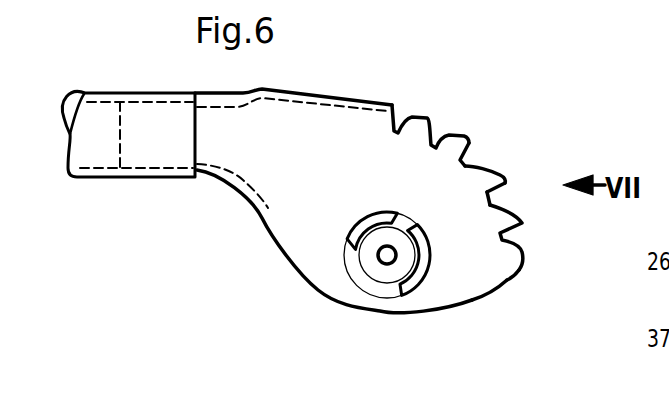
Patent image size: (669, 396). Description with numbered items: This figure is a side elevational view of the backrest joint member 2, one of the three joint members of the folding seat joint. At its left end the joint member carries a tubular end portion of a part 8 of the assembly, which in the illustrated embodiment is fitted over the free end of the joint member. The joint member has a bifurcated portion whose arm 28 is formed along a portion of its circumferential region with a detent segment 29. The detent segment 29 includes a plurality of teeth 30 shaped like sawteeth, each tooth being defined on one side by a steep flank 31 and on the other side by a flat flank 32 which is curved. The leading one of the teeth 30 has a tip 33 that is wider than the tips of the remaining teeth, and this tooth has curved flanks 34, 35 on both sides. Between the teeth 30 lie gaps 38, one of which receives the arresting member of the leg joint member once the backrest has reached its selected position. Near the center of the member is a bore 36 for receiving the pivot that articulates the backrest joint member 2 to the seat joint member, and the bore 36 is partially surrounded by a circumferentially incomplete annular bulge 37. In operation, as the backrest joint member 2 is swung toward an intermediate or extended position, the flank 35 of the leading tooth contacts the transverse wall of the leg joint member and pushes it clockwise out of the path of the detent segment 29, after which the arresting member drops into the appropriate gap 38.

The backrest joint member 2 is at (267, 172).
The leg part 8 is at (101, 157).
The arm 28 is at (300, 213).
The detent segment 29 is at (452, 125).
The teeth 30 is at (486, 174).
The steep flank 31 is at (495, 193).
The flat flank 32 is at (503, 175).
The tip 33 is at (523, 264).
The curved flank 34 is at (524, 246).
The curved flank 35 is at (500, 287).
The bores 36 is at (386, 257).
The annular bulges 37 is at (350, 236).
The gaps 38 is at (467, 158).